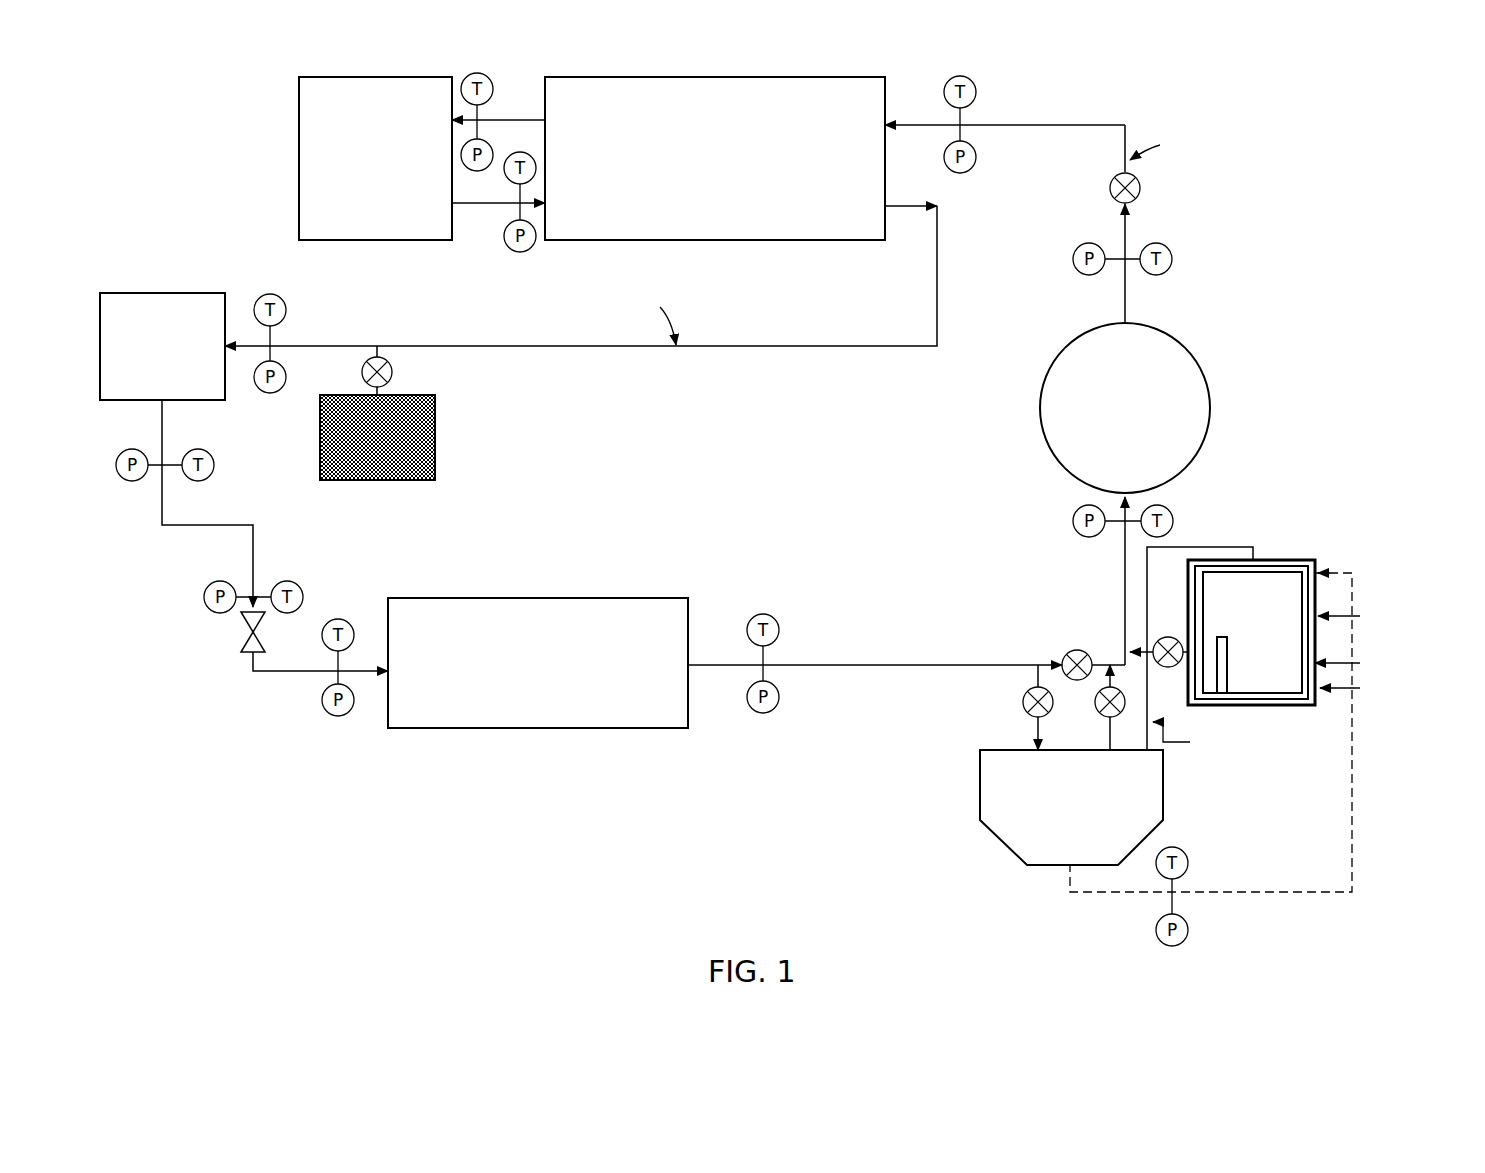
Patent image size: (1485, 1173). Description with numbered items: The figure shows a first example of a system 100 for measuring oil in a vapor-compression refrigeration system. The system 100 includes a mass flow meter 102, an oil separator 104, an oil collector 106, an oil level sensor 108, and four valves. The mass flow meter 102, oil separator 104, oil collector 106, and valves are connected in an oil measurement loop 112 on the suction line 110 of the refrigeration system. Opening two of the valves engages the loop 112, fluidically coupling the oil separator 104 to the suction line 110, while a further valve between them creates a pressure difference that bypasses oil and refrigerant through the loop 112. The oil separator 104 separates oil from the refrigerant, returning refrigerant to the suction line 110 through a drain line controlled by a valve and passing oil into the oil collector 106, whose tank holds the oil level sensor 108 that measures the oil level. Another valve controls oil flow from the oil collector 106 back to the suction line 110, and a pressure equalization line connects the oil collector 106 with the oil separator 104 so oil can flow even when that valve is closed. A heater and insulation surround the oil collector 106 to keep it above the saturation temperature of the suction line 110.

The system 100 is at (315, 932).
The mass flow meter 102 is at (165, 290).
The oil separator 104 is at (1043, 868).
The oil collector 106 is at (1310, 705).
The oil level sensor 108 is at (1234, 656).
The suction line 110 is at (987, 658).
The oil measurement loop 112 is at (1392, 762).